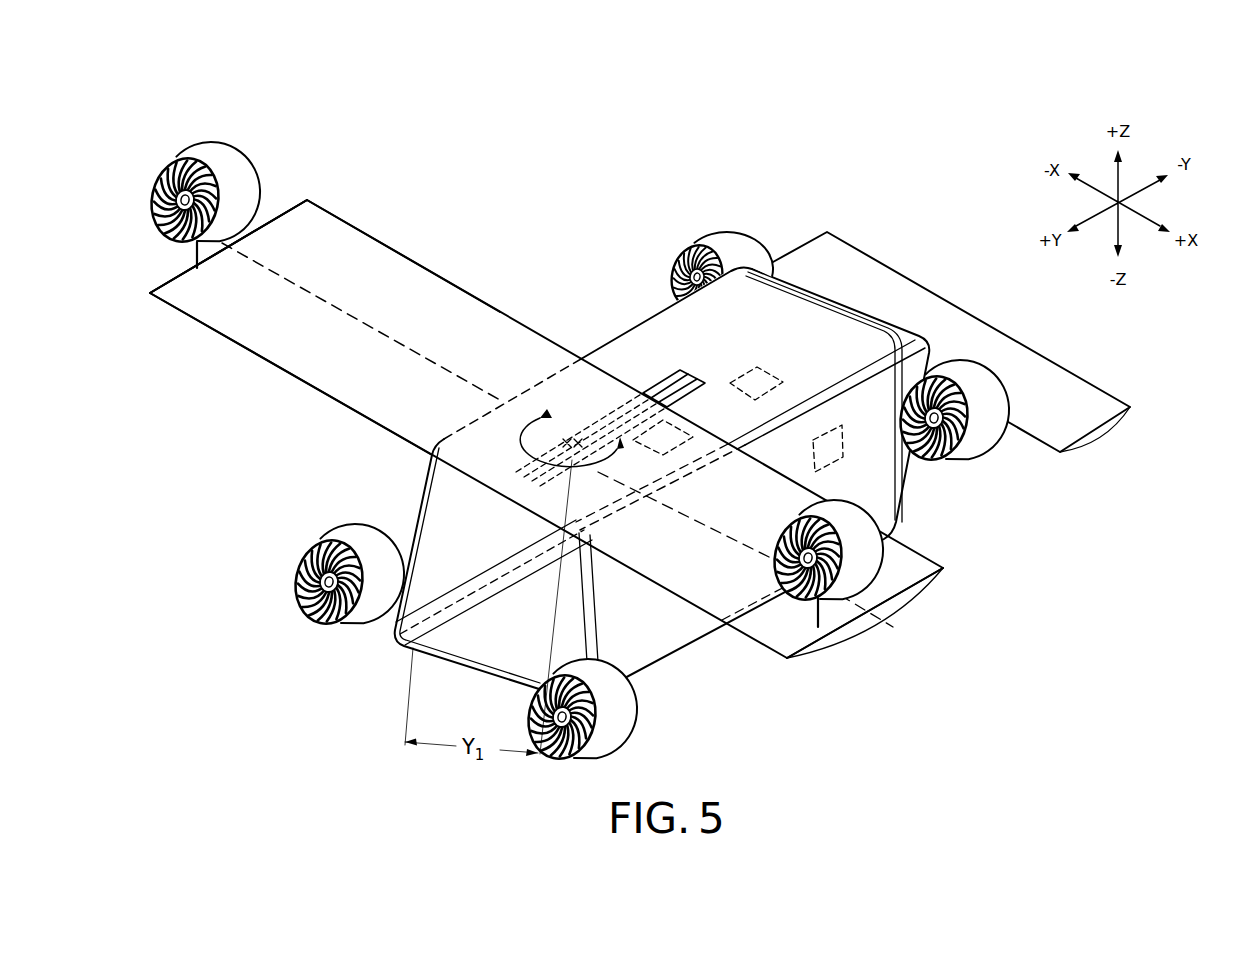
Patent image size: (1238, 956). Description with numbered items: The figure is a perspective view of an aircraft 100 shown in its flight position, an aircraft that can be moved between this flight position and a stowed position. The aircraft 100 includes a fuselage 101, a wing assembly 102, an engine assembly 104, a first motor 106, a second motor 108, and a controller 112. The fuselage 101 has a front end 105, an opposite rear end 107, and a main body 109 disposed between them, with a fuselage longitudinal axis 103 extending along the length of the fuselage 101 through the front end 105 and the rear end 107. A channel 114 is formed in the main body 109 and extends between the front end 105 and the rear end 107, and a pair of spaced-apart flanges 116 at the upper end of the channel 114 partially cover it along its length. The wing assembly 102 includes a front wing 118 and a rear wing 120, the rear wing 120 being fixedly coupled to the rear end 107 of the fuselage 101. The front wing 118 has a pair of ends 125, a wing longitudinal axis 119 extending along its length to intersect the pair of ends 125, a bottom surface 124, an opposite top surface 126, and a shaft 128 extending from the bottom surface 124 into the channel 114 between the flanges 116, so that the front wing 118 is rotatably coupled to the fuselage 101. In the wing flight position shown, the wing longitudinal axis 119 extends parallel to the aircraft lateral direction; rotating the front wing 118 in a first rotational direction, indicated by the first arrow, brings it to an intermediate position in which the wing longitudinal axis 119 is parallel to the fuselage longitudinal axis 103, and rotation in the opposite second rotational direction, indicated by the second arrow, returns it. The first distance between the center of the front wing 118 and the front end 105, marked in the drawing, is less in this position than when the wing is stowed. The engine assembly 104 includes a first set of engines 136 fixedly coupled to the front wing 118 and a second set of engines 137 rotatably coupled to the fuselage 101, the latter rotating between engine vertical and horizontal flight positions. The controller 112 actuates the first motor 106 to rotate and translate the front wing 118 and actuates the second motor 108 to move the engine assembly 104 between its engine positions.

The aircraft 100 is at (619, 415).
The fuselage 101 is at (662, 473).
The wing assembly 102 is at (526, 425).
The fuselage longitudinal axis 103 is at (457, 603).
The engine assembly 104 is at (561, 428).
The front end 105 is at (470, 675).
The first motor 106 is at (683, 450).
The rear end 107 is at (848, 312).
The second motor 108 is at (840, 462).
The main body 109 is at (656, 642).
The controller 112 is at (785, 368).
The channel 114 is at (695, 378).
The flanges 116 is at (668, 375).
The front wing 118 is at (232, 342).
The wing longitudinal axis 119 is at (310, 293).
The rear wing 120 is at (937, 295).
The bottom surface 124 is at (335, 400).
The ends 125 is at (166, 283).
The top surface 126 is at (405, 254).
The shaft 128 is at (580, 432).
The first set of engines 136 is at (322, 137).
The second set of engines 137 is at (745, 232).